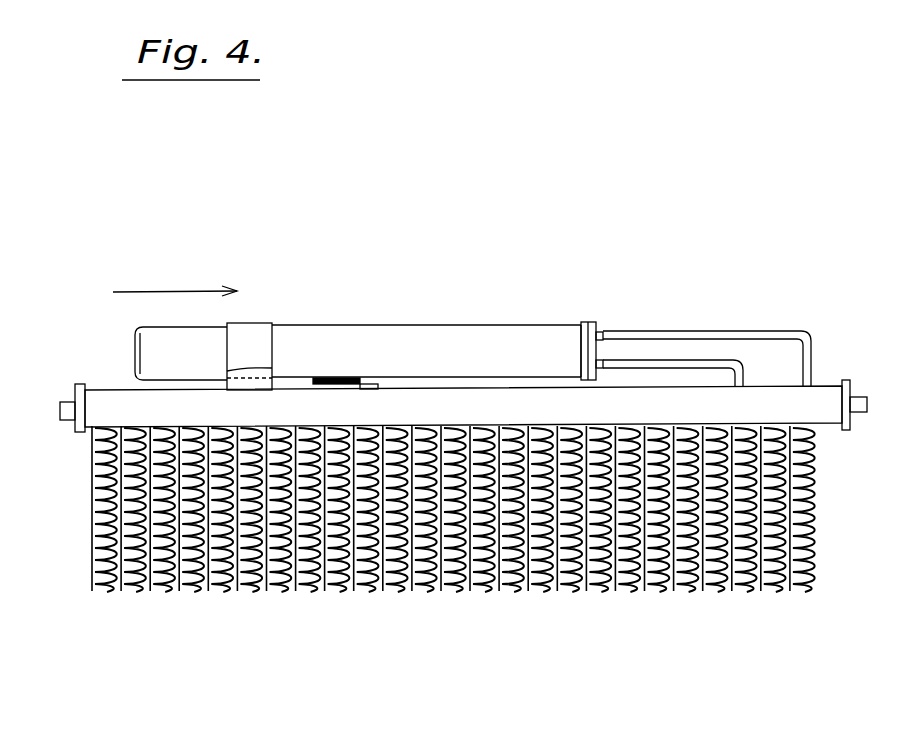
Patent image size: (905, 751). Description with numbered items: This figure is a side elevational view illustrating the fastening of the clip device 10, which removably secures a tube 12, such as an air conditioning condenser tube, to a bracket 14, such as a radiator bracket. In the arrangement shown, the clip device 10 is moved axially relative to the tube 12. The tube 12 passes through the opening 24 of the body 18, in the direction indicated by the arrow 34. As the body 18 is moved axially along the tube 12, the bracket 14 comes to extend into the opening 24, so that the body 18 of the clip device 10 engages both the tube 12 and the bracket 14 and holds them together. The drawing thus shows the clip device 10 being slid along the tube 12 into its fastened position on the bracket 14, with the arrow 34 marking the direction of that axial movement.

The clip device 10 is at (343, 308).
The tube 12 is at (533, 350).
The bracket 14 is at (380, 390).
The body 18 is at (245, 350).
The opening 24 is at (223, 323).
The arrow 34 is at (200, 288).